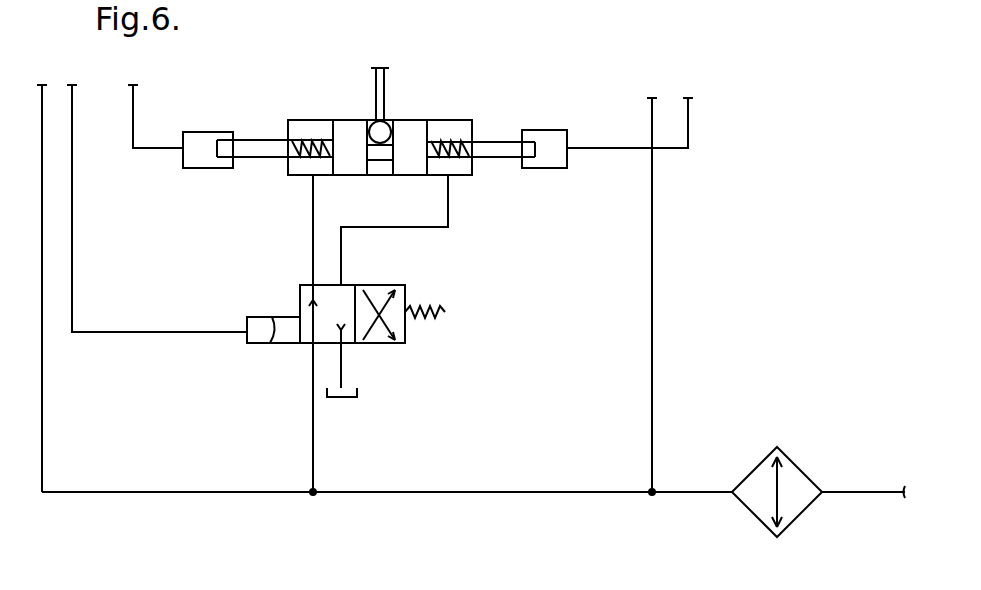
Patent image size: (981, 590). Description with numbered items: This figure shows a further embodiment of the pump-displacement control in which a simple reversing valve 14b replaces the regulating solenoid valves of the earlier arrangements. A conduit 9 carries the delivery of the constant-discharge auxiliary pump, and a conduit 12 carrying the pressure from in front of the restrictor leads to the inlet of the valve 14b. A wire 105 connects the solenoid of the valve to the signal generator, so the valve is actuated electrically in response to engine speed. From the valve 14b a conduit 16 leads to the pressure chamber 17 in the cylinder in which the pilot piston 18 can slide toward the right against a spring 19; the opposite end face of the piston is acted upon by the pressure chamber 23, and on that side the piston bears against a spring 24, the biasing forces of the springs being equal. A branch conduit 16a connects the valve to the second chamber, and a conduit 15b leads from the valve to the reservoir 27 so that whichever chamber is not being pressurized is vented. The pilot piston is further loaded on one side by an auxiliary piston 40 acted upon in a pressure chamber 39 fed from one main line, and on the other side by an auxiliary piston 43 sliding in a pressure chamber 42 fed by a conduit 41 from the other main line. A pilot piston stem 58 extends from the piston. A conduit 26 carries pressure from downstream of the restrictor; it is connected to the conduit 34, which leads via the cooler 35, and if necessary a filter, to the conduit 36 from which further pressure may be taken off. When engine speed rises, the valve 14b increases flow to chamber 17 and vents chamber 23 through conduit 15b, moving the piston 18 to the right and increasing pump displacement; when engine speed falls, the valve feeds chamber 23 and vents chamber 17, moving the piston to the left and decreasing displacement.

The conduit 9 is at (44, 395).
The wire 105 is at (74, 222).
The pressure chamber 39 is at (193, 132).
The auxiliary piston 40 is at (253, 146).
The pressure chamber 17 is at (305, 121).
The spring 24 is at (303, 160).
The pilot piston 18 is at (384, 122).
The pilot piston stem 58 is at (374, 89).
The pressure chamber 23 is at (437, 125).
The spring 19 is at (456, 127).
The auxiliary piston 43 is at (505, 142).
The pressure chamber 42 is at (567, 166).
The conduit 41 is at (690, 127).
The conduit 26 is at (654, 222).
The conduit 16 is at (315, 210).
The branch conduit 16a is at (450, 206).
The reversing valve 14b is at (405, 285).
The conduit 12 is at (312, 428).
The conduit 15b is at (343, 365).
The reservoir 27 is at (345, 398).
The conduit 34 is at (490, 490).
The cooler 35 is at (763, 460).
The conduit 36 is at (855, 490).